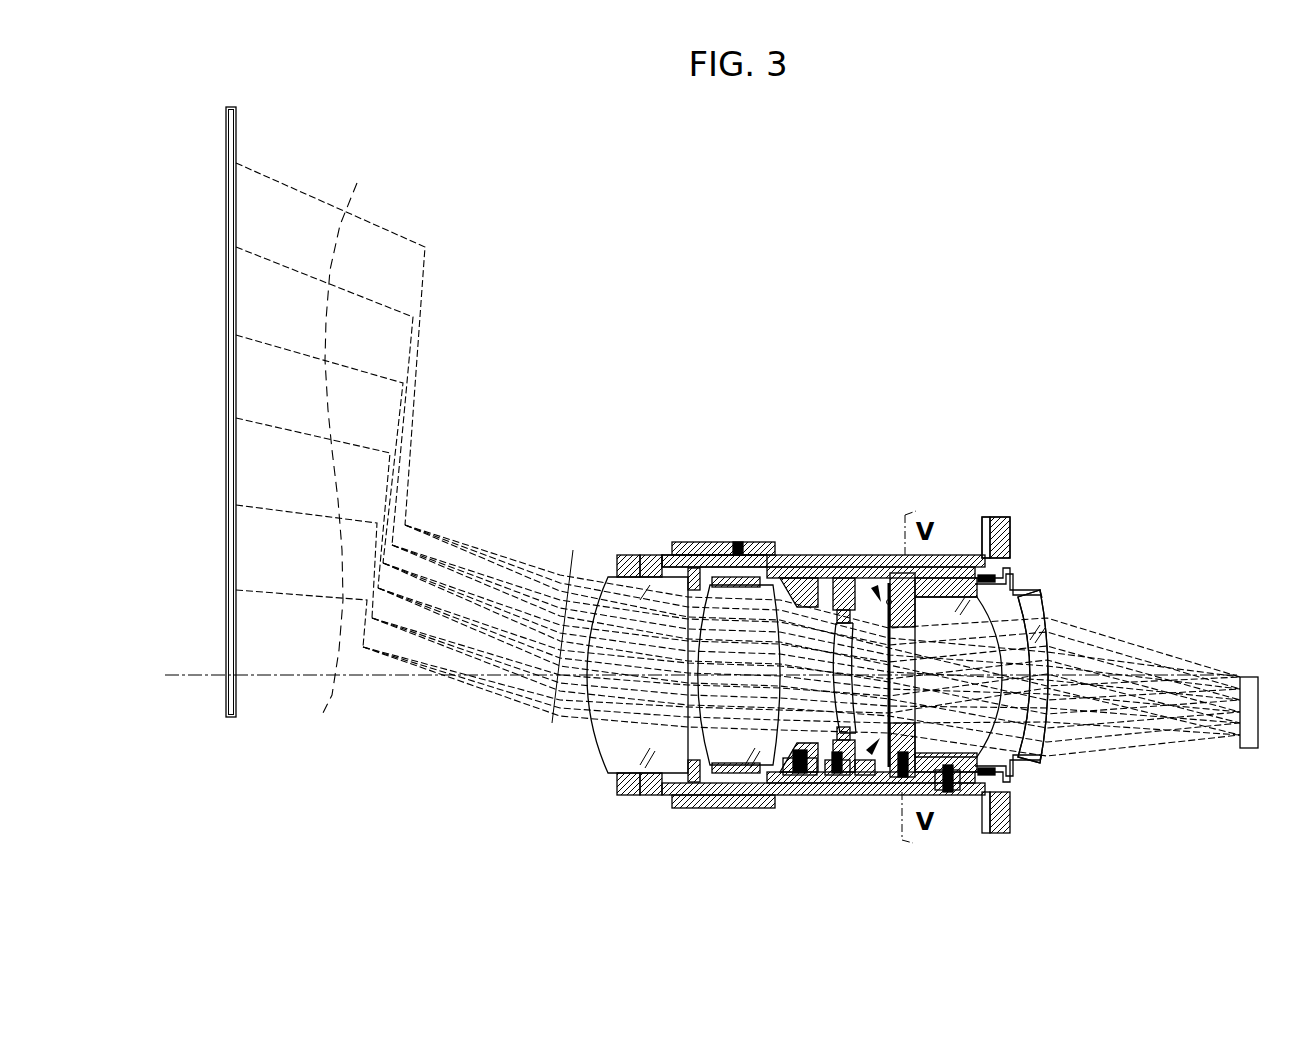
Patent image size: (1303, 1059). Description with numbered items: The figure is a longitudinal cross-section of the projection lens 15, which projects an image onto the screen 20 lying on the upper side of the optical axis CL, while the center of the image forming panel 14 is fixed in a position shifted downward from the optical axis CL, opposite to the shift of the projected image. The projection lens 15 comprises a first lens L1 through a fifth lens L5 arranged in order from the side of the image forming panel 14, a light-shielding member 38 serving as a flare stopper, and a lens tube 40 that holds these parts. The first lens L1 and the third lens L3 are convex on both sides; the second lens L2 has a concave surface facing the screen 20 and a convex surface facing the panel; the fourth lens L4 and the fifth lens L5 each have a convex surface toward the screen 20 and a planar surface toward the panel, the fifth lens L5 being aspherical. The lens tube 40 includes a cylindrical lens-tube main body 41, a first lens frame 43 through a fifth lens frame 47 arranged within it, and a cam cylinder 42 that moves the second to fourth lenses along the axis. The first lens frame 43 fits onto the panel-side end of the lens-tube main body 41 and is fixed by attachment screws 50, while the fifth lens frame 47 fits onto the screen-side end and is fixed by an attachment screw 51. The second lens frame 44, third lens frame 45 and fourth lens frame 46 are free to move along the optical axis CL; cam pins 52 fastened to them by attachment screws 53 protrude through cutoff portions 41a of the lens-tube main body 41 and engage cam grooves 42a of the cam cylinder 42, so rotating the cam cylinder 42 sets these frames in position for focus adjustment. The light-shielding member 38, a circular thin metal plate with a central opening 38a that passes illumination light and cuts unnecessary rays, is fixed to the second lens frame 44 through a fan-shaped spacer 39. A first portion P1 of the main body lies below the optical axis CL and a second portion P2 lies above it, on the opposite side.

The image forming panel 14 is at (1248, 750).
The projection lens 15 is at (1016, 312).
The screen 20 is at (224, 121).
The light-shielding member 38 is at (1047, 636).
The opening 38a is at (847, 578).
The spacer 39 is at (888, 582).
The lens tube 40 is at (1020, 530).
The lens-tube main body 41 is at (767, 543).
The cutoff portions 41a is at (860, 780).
The cam cylinder 42 is at (955, 557).
The cam grooves 42a is at (800, 777).
The first lens frame 43 is at (1040, 588).
The second lens frame 44 is at (937, 557).
The third lens frame 45 is at (817, 578).
The fourth lens frame 46 is at (650, 555).
The fifth lens frame 47 is at (610, 555).
The attachment screws 50 is at (1012, 575).
The attachment screw 51 is at (737, 542).
The cam pins 52 is at (868, 793).
The attachment screws 53 is at (897, 793).
The first lens L1 is at (1047, 764).
The second lens L2 is at (950, 752).
The third lens L3 is at (812, 768).
The fourth lens L4 is at (742, 776).
The fifth lens L5 is at (606, 752).
The first portion P1 is at (870, 750).
The second portion P2 is at (876, 592).
The optical axis CL is at (190, 679).